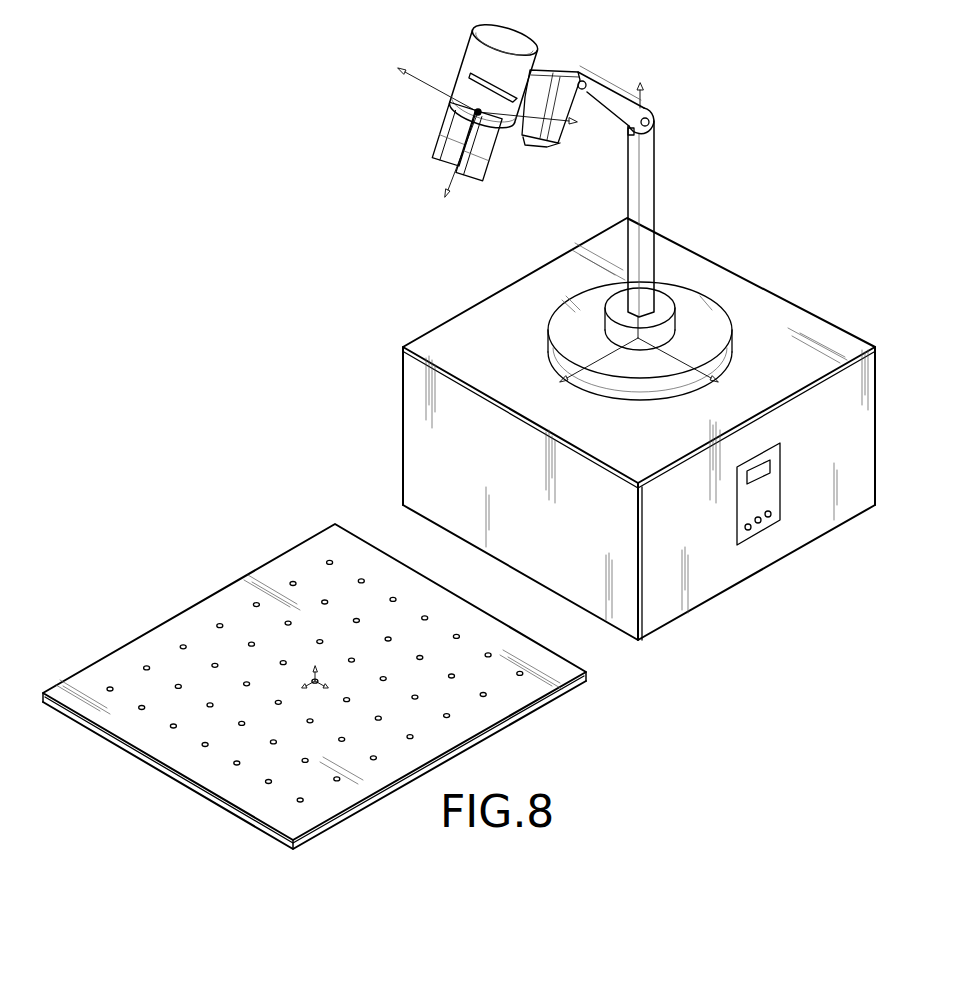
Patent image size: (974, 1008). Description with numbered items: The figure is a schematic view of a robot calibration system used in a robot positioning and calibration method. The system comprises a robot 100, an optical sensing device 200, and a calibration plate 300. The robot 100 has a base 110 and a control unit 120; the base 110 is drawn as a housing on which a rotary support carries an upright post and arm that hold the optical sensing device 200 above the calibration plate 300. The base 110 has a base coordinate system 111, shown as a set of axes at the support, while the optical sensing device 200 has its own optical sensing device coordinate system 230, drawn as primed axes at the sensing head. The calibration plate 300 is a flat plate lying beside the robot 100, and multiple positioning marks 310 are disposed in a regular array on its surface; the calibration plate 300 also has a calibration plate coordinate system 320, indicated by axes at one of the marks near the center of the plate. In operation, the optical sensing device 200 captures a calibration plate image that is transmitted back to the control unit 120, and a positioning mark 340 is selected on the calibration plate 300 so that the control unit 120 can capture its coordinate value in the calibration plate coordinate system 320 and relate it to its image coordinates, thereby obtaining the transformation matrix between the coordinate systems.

The robot 100 is at (648, 326).
The base 110 is at (868, 453).
The base coordinate system 111 is at (707, 373).
The control unit 120 is at (780, 492).
The optical sensing device 200 is at (495, 120).
The optical sensing device coordinate system 230 is at (451, 180).
The calibration plate 300 is at (314, 658).
The positioning marks 310 is at (110, 688).
The calibration plate coordinate system 320 is at (320, 682).
The positioning mark 340 is at (183, 646).